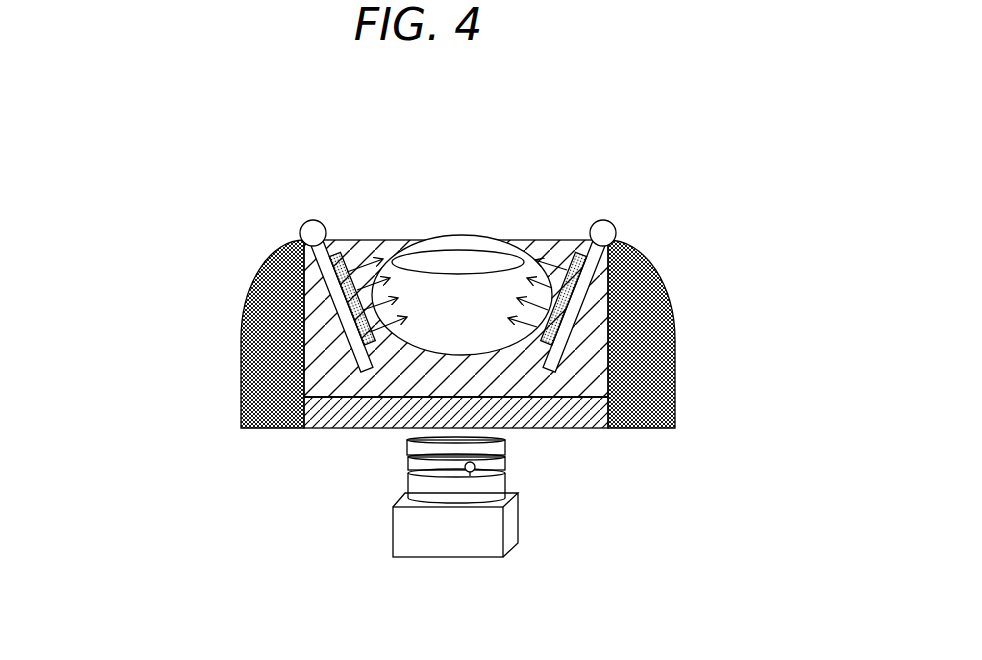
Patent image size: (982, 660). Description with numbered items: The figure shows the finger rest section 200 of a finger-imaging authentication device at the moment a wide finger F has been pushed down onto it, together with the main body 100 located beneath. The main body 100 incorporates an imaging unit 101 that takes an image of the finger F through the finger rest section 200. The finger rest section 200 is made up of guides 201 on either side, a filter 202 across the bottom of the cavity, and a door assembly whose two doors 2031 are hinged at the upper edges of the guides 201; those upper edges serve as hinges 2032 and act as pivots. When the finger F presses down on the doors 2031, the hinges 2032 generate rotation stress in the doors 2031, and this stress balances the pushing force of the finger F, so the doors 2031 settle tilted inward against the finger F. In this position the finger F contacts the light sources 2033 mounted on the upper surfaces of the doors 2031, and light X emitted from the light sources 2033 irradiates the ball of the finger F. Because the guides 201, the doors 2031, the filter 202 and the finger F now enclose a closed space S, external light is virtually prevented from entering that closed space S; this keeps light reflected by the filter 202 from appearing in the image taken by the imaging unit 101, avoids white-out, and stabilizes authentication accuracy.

The finger rest section 200 is at (108, 180).
The guides 201 is at (246, 307).
The doors 2031 is at (342, 342).
The hinges 2032 is at (316, 220).
The light sources 2033 is at (333, 256).
The filter 202 is at (597, 428).
The main body 100 is at (107, 452).
The imaging unit 101 is at (453, 557).
The finger F is at (475, 235).
The light X is at (375, 259).
The closed space S is at (368, 400).